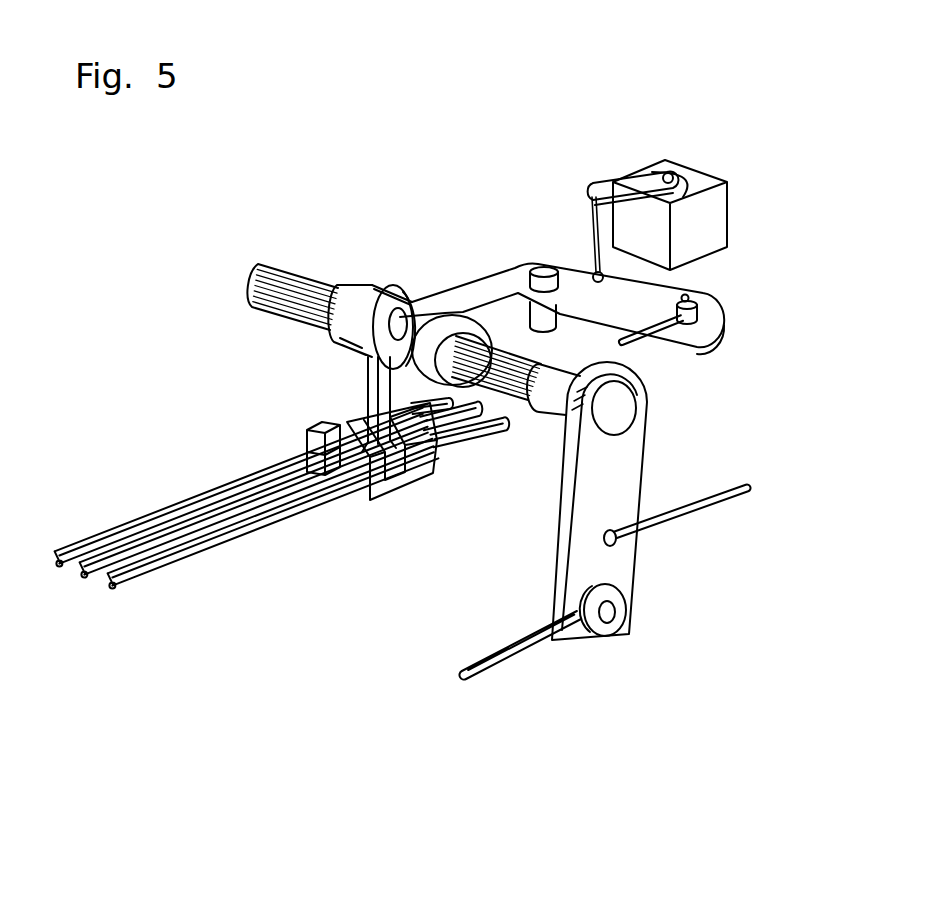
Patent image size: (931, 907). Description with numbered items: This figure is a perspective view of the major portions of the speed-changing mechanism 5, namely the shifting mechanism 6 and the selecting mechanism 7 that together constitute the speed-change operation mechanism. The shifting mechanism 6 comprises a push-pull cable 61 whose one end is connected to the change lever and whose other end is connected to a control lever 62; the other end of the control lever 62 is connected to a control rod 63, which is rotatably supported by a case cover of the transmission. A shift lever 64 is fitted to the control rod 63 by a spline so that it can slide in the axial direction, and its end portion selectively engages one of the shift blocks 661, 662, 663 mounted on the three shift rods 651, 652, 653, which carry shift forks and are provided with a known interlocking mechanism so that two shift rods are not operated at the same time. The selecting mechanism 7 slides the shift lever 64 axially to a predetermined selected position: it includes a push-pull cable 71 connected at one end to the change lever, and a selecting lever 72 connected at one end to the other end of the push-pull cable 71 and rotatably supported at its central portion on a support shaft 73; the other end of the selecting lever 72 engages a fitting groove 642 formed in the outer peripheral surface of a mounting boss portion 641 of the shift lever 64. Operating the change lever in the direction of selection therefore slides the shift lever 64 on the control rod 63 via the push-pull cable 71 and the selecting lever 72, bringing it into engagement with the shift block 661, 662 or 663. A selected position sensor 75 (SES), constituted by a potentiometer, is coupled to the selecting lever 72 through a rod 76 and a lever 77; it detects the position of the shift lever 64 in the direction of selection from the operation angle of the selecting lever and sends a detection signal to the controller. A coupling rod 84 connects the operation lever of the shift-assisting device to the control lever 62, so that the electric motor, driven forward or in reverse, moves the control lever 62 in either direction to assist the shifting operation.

The speed-changing mechanism 5 is at (383, 172).
The shifting mechanism 6 is at (637, 678).
The selecting mechanism 7 is at (485, 257).
The push-pull cable 61 is at (497, 667).
The control lever 62 is at (620, 563).
The control rod 63 is at (553, 402).
The shift lever 64 is at (370, 390).
The push-pull cable 71 is at (647, 350).
The selecting lever 72 is at (657, 293).
The support shaft 73 is at (541, 266).
The selected position sensor 75 is at (700, 167).
The rod 76 is at (588, 270).
The lever 77 is at (610, 190).
The coupling rod 84 is at (713, 497).
The mounting boss portion 641 is at (352, 290).
The fitting groove 642 is at (397, 338).
The shift rod 651 is at (150, 522).
The shift rod 652 is at (117, 553).
The shift rod 653 is at (177, 553).
The shift block 661 is at (313, 430).
The shift block 662 is at (303, 449).
The shift block 663 is at (387, 487).